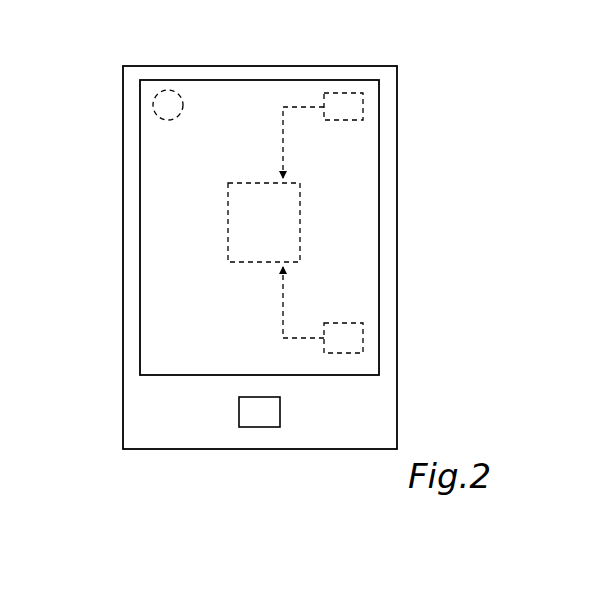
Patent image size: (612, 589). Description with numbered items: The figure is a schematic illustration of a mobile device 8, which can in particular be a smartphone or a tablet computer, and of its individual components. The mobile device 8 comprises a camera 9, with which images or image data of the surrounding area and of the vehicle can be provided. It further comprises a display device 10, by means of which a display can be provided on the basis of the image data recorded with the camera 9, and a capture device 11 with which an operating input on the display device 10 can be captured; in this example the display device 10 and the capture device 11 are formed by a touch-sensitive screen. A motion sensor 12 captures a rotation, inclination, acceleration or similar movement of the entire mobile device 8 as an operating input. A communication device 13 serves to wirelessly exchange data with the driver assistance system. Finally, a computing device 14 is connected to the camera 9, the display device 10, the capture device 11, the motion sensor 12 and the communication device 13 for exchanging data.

The mobile device 8 is at (193, 65).
The camera 9 is at (153, 106).
The display device 10 is at (362, 175).
The capture device 11 is at (170, 250).
The motion sensor 12 is at (352, 338).
The communication device 13 is at (363, 107).
The computing device 14 is at (292, 218).